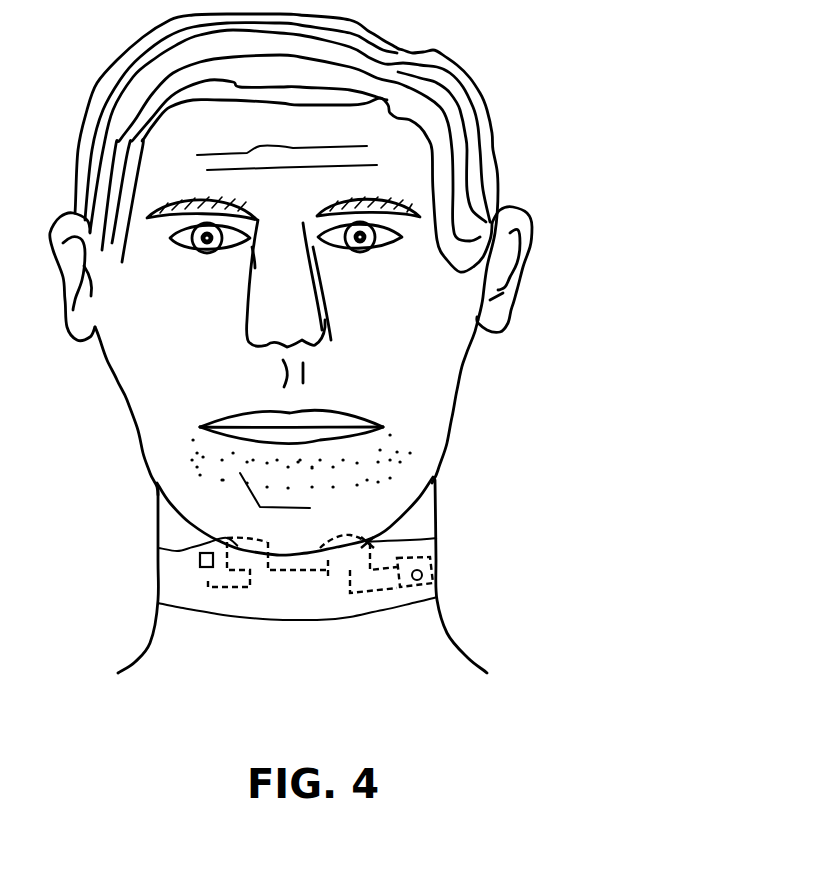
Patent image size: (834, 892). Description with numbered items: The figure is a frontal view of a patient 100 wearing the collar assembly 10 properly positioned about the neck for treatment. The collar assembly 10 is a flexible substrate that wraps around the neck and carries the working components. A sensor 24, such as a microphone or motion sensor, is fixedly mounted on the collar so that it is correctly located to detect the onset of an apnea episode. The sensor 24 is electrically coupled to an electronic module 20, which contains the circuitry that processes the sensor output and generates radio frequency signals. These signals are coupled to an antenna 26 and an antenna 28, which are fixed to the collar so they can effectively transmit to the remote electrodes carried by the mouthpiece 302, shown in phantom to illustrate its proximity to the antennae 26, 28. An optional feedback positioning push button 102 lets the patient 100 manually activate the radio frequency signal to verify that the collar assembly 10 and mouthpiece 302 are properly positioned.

The patient 100 is at (690, 135).
The collar assembly 10 is at (167, 562).
The electronic module 20 is at (438, 545).
The sensor 24 is at (203, 562).
The antenna 26 is at (342, 573).
The antenna 28 is at (260, 563).
The feedback positioning push button 102 is at (422, 577).
The mouthpiece 302 is at (361, 523).